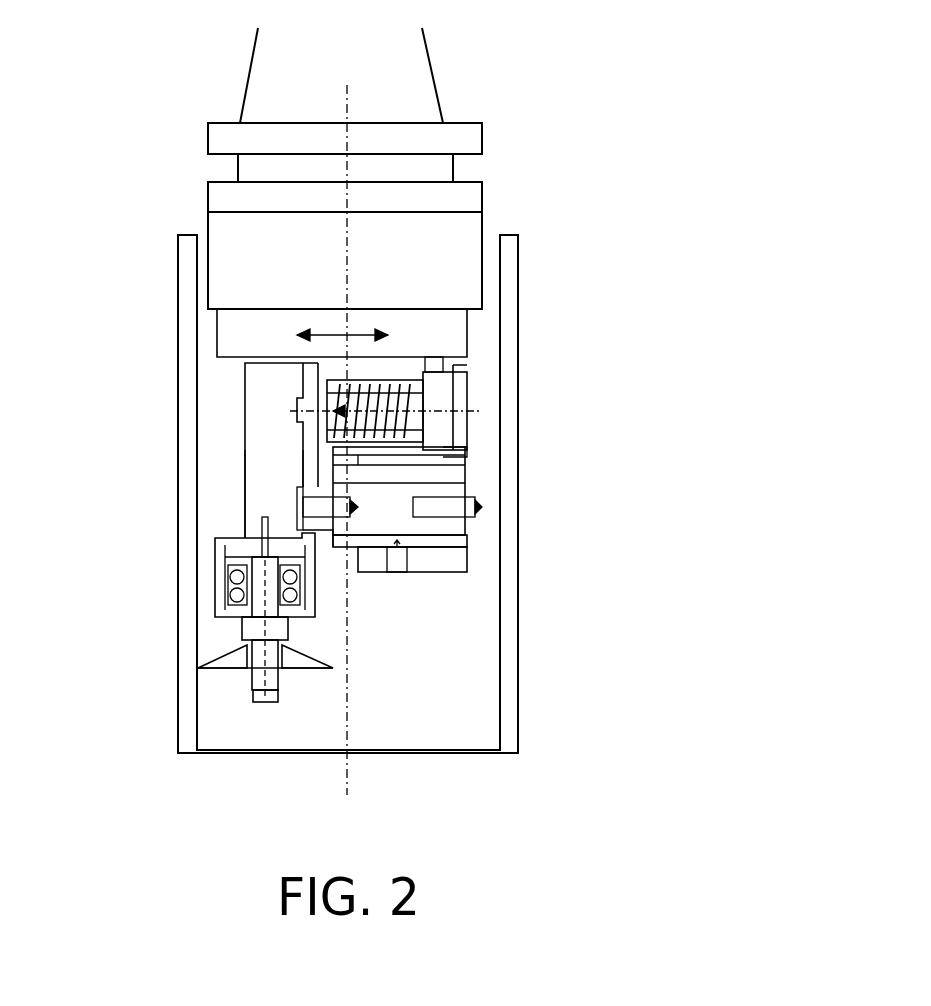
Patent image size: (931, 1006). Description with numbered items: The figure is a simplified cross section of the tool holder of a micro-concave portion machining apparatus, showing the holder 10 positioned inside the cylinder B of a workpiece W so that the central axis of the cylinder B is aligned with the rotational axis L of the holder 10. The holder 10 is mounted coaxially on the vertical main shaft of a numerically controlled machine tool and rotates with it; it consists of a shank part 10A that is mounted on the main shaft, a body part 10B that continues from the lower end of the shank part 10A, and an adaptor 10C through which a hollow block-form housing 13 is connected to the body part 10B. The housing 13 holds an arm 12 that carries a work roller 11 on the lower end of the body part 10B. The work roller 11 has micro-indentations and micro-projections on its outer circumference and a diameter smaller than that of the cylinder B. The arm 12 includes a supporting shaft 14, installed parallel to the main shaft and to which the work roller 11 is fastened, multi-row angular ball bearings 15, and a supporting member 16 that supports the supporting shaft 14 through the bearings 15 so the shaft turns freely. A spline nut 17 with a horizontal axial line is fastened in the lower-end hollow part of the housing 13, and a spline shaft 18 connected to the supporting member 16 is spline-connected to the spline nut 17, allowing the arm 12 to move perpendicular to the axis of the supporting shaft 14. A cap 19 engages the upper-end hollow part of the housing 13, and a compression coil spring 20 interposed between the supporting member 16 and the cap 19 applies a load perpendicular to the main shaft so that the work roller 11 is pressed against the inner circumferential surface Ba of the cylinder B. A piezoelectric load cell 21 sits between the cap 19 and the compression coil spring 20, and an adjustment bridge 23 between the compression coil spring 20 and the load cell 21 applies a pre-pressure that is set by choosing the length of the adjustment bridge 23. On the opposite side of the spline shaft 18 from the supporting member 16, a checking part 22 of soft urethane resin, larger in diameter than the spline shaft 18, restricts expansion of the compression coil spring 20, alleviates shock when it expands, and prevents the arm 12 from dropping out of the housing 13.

The holder 10 is at (559, 91).
The shank part 10A is at (402, 77).
The body part 10B is at (483, 193).
The adaptor 10C is at (442, 333).
The workpiece W is at (522, 288).
The cylinder B is at (520, 723).
The inner circumferential surface Ba is at (200, 712).
The rotational axis L is at (348, 783).
The work roller 11 is at (227, 663).
The arm 12 is at (277, 437).
The housing 13 is at (425, 560).
The supporting shaft 14 is at (263, 703).
The multi-row angular ball bearings 15 is at (217, 587).
The supporting member 16 is at (265, 482).
The spline nut 17 is at (447, 537).
The spline shaft 18 is at (398, 495).
The cap 19 is at (460, 398).
The compression coil spring 20 is at (328, 380).
The piezoelectric load cell 21 is at (445, 432).
The checking part 22 is at (450, 522).
The adjustment bridge 23 is at (377, 380).